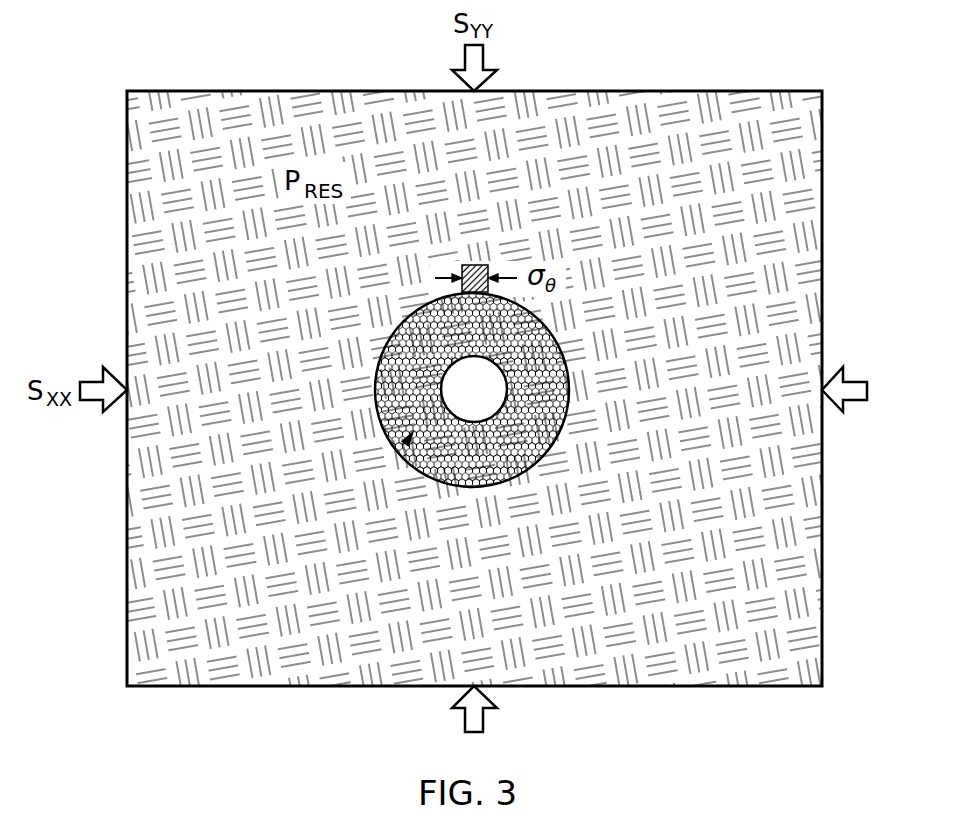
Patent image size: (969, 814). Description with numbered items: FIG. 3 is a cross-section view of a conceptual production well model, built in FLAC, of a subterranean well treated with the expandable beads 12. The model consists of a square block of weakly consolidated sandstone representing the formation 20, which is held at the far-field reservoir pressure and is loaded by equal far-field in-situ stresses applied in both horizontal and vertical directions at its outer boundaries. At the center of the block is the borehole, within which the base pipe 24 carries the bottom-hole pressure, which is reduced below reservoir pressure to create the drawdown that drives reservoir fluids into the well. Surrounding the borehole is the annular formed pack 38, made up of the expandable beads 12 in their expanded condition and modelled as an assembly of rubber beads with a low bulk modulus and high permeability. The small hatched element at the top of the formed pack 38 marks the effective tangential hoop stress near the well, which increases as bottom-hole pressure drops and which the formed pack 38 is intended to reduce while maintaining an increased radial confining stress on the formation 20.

The formation 20 is at (747, 193).
The expandable beads 12 is at (542, 435).
The base pipe 24 is at (507, 388).
The formed pack 38 is at (410, 436).